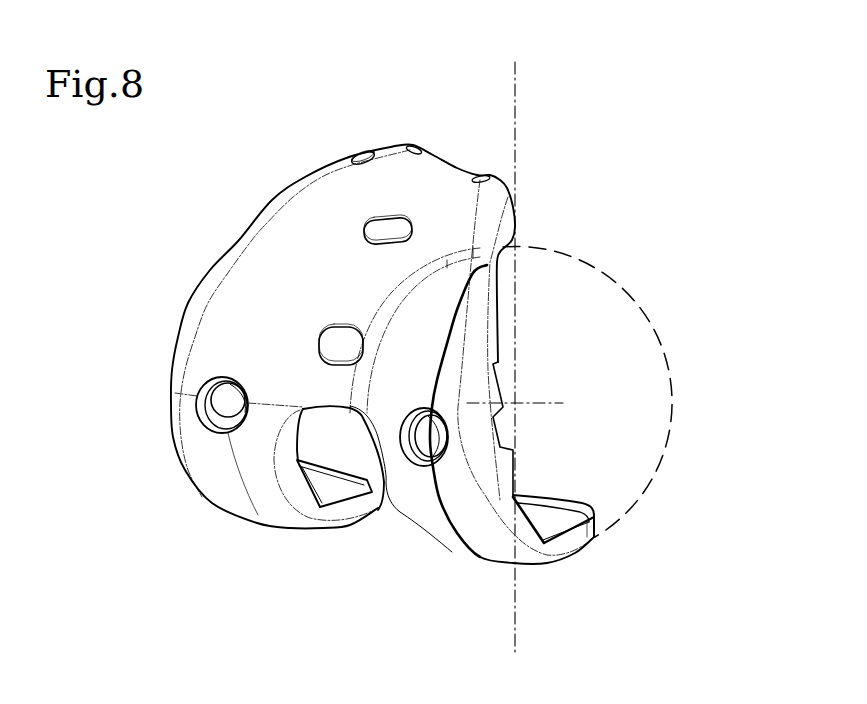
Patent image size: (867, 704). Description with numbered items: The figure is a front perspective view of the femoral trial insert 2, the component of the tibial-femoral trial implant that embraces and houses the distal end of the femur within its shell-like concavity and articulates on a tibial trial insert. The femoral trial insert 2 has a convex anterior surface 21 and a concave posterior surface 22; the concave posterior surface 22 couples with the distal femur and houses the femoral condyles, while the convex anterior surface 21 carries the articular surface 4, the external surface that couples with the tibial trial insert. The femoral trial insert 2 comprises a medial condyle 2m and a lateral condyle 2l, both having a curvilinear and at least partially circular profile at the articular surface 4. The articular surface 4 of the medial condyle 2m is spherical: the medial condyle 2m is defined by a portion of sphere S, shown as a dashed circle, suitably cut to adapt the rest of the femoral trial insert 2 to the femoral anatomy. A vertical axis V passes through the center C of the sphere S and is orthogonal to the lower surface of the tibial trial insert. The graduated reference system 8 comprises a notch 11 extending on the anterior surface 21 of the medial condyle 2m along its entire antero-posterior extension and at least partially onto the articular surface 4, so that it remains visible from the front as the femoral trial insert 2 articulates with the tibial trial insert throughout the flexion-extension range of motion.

The femoral trial insert 2 is at (635, 248).
The convex anterior surface 21 is at (243, 299).
The concave posterior surface 22 is at (516, 233).
The lateral condyle 2l is at (282, 502).
The medial condyle 2m is at (500, 547).
The articular surface 4 is at (231, 514).
The graduated reference system 8 is at (426, 508).
The notch 11 is at (450, 528).
The vertical axis V is at (515, 82).
The center C is at (515, 403).
The sphere S is at (673, 433).